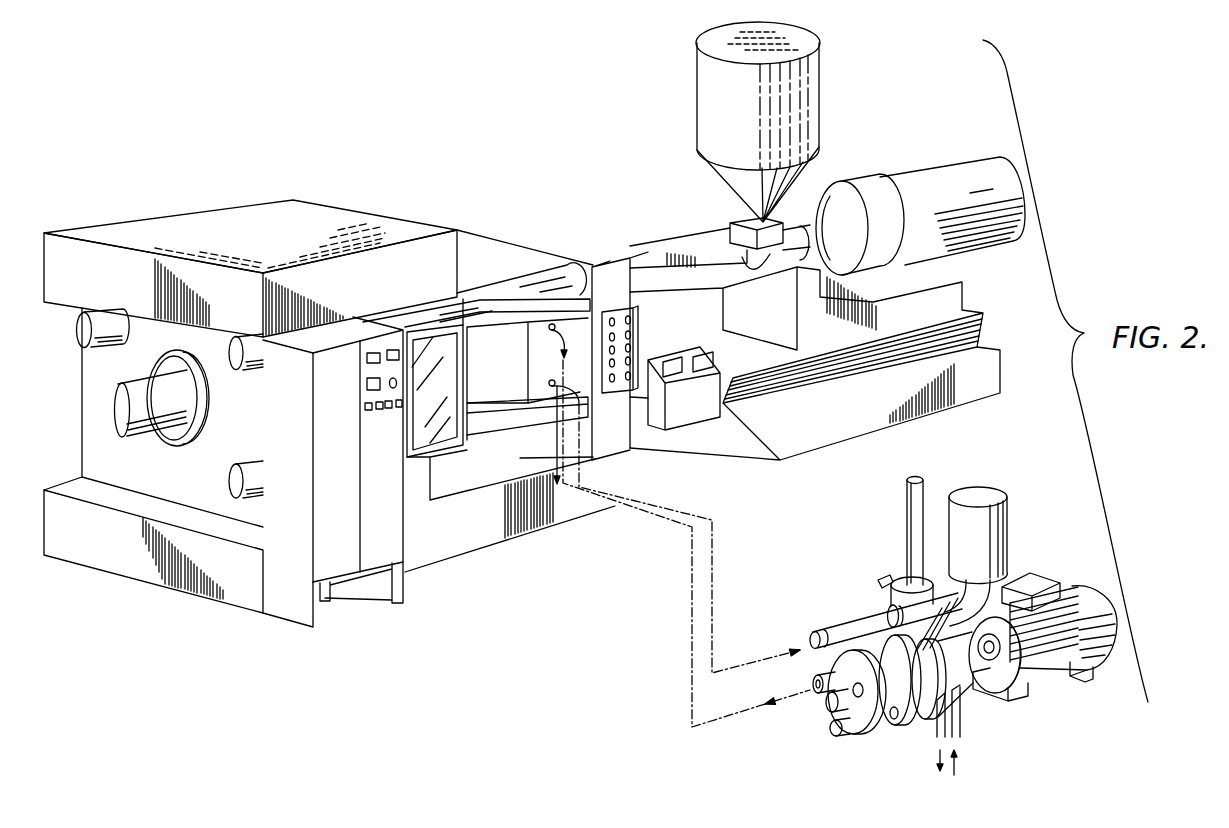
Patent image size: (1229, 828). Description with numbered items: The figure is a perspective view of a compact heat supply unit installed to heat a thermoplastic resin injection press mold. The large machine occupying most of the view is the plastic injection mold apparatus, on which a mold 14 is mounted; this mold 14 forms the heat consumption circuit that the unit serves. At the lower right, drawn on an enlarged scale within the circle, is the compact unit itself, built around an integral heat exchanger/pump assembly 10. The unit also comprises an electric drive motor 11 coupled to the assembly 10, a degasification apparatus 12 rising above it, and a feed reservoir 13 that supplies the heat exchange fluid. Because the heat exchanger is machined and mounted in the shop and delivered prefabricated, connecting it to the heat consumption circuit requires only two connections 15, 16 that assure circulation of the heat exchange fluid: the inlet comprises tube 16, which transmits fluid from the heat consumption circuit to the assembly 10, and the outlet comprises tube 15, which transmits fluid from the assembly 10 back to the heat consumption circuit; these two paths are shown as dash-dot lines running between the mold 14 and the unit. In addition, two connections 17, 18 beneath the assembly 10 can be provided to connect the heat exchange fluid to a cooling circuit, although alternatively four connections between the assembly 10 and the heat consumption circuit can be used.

The integral heat exchanger/pump assembly 10 is at (893, 733).
The electric drive motor 11 is at (1110, 657).
The degasification apparatus 12 is at (947, 586).
The feed reservoir 13 is at (993, 538).
The mold 14 is at (540, 364).
The tube 15 is at (810, 700).
The tube 16 is at (848, 628).
The connection 17 is at (960, 730).
The connection 18 is at (933, 728).